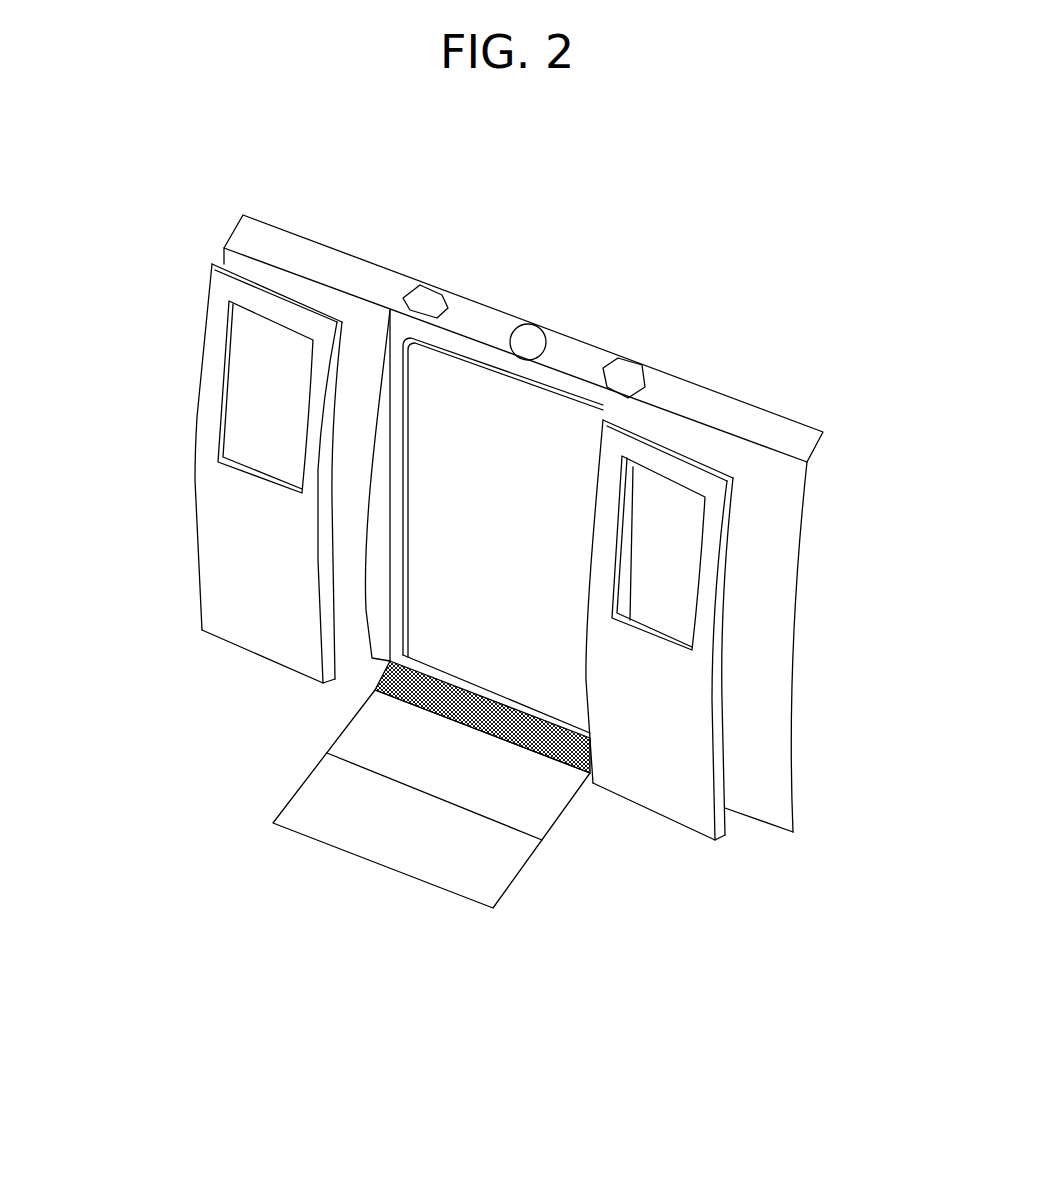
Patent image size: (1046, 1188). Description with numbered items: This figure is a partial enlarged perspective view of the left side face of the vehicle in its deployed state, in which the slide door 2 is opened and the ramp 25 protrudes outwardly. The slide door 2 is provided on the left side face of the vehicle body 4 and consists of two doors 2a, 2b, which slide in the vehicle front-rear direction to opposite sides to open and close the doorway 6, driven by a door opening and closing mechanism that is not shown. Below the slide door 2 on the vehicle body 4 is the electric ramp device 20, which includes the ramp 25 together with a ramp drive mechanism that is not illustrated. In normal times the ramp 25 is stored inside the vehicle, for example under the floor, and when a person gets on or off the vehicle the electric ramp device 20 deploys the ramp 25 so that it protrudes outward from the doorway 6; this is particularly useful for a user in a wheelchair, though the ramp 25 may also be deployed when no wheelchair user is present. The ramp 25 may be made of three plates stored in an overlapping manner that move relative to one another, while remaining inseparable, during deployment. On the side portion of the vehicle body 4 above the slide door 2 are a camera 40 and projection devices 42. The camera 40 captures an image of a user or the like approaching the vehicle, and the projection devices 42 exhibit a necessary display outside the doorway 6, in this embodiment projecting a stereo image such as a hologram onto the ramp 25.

The slide door 2 is at (498, 555).
The door 2a is at (242, 550).
The door 2b is at (697, 753).
The vehicle body 4 is at (780, 553).
The doorway 6 is at (427, 388).
The electric ramp device 20 is at (465, 853).
The ramp 25 is at (535, 815).
The camera 40 is at (530, 328).
The projection devices 42 is at (428, 298).